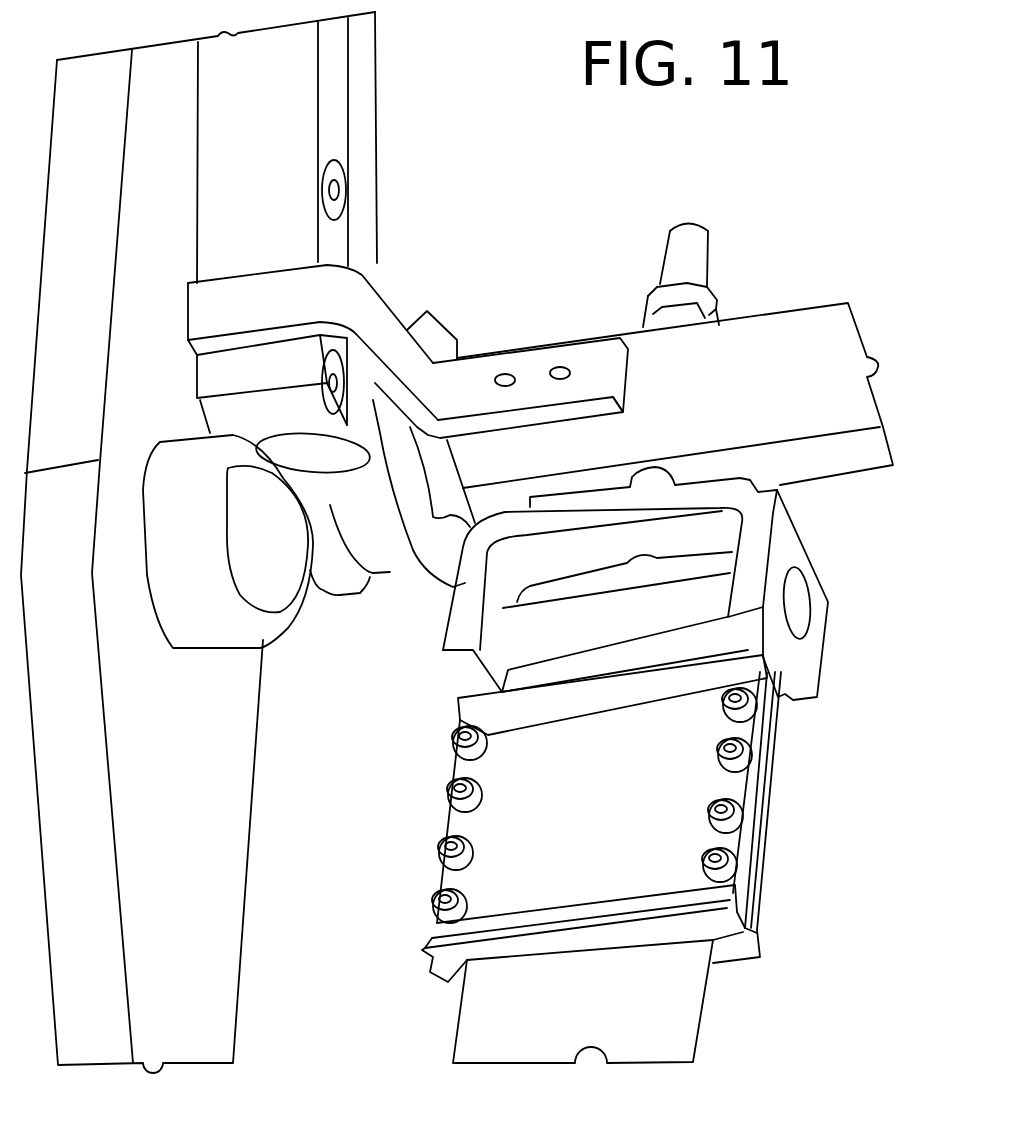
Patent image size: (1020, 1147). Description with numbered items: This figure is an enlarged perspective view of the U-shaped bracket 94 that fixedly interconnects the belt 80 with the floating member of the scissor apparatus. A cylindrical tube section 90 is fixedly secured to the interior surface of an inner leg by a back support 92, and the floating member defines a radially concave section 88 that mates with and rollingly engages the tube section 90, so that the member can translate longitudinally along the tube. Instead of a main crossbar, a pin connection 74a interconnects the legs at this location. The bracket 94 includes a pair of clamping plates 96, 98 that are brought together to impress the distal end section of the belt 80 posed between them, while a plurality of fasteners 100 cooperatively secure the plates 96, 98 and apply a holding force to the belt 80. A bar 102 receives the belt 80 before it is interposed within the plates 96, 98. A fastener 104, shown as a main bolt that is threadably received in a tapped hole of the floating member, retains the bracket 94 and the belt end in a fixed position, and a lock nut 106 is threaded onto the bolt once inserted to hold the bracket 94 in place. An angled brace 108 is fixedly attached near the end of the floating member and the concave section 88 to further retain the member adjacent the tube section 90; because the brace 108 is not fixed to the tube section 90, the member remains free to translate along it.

The pin connection 74a is at (283, 632).
The belt 80 is at (703, 1000).
The radially concave section 88 is at (390, 570).
The cylindrical tube section 90 is at (378, 84).
The back support 92 is at (335, 125).
The U-shaped bracket 94 is at (428, 696).
The clamping plate 96 is at (748, 828).
The clamping plate 98 is at (757, 885).
The fasteners 100 is at (743, 750).
The bar 102 is at (807, 607).
The fastener 104 is at (703, 222).
The lock nut 106 is at (718, 305).
The angled brace 108 is at (470, 387).